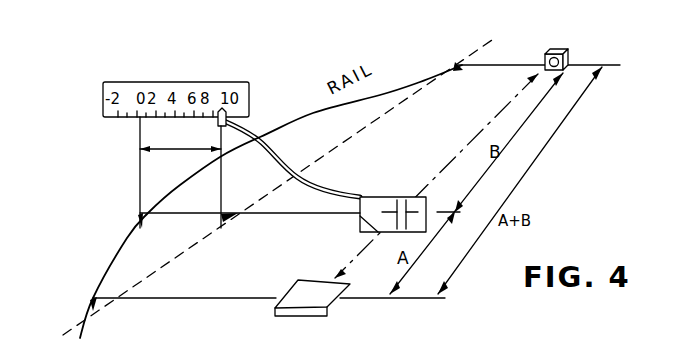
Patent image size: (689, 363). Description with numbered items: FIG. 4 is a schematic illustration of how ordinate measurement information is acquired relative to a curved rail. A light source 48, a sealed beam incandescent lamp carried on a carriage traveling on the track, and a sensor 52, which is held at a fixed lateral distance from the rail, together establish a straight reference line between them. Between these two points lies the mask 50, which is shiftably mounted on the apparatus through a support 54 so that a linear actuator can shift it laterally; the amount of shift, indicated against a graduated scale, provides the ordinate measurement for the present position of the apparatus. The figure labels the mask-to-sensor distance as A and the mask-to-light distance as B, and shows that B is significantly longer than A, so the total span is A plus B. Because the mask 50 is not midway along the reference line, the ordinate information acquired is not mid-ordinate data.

The light source 48 is at (566, 58).
The mask 50 is at (373, 202).
The sensor 52 is at (330, 298).
The support 54 is at (305, 215).